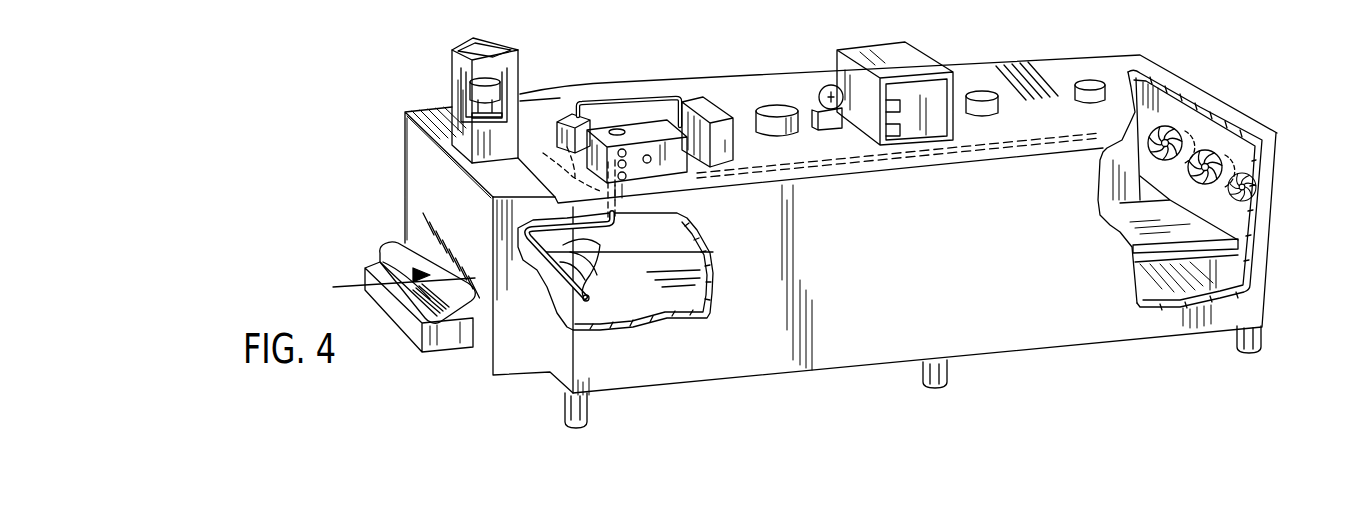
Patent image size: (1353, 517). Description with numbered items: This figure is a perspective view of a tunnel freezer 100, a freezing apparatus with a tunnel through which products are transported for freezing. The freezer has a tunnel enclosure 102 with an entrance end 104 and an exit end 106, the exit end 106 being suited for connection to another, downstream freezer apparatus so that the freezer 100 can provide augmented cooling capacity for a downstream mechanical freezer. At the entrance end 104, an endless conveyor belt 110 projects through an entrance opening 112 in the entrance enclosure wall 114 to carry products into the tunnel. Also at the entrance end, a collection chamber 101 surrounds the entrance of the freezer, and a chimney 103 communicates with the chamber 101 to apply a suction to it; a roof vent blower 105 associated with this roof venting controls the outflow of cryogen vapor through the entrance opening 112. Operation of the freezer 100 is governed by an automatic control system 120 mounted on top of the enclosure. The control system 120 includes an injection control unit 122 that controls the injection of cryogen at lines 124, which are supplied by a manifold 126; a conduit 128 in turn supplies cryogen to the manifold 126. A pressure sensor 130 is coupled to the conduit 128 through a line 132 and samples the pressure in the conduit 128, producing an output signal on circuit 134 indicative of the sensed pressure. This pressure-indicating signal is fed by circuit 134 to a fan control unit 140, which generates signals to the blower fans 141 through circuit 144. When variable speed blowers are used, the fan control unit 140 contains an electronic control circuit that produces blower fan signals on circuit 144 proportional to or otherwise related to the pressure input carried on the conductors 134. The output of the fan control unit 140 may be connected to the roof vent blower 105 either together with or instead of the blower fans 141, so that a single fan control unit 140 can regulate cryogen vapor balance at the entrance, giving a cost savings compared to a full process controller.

The tunnel freezer 100 is at (1015, 50).
The collection chamber 101 is at (520, 353).
The tunnel enclosure 102 is at (1020, 313).
The chimney 103 is at (453, 52).
The entrance end 104 is at (417, 137).
The roof vent blower 105 is at (470, 91).
The exit end 106 is at (1242, 223).
The endless conveyor belt 110 is at (388, 253).
The entrance opening 112 is at (423, 214).
The entrance enclosure wall 114 is at (423, 170).
The automatic control system 120 is at (736, 110).
The injection control unit 122 is at (656, 128).
The lines 124 is at (587, 255).
The manifold 126 is at (590, 300).
The conduit 128 is at (633, 231).
The pressure sensor 130 is at (556, 116).
The line 132 is at (571, 178).
The circuit 134 is at (617, 100).
The fan control unit 140 is at (733, 152).
The blower fans 141 is at (1242, 168).
The circuit 144 is at (935, 160).